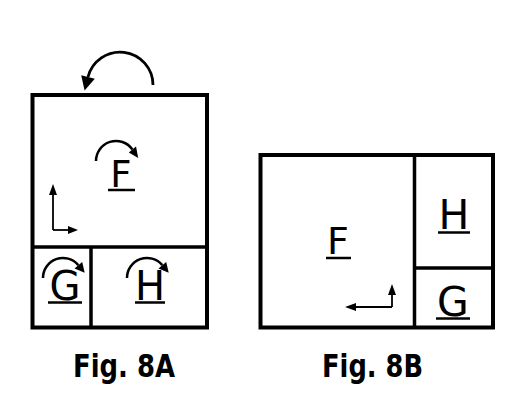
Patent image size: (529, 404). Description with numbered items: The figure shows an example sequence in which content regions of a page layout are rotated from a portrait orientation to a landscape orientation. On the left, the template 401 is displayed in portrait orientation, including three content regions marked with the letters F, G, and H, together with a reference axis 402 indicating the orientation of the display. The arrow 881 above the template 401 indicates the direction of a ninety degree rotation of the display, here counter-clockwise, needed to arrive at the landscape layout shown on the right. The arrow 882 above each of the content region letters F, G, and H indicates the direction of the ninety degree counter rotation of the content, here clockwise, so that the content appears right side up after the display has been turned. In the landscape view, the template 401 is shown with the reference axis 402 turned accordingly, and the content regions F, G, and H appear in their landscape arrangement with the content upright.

In FIG. 8A, the template 401 is at (211, 97).
In FIG. 8B, the template 401 is at (460, 154).
In FIG. 8A, the reference axis 402 is at (56, 228).
In FIG. 8B, the reference axis 402 is at (389, 304).
In FIG. 8A, the arrow 881 is at (120, 52).
In FIG. 8A, the arrow 882 is at (117, 141).